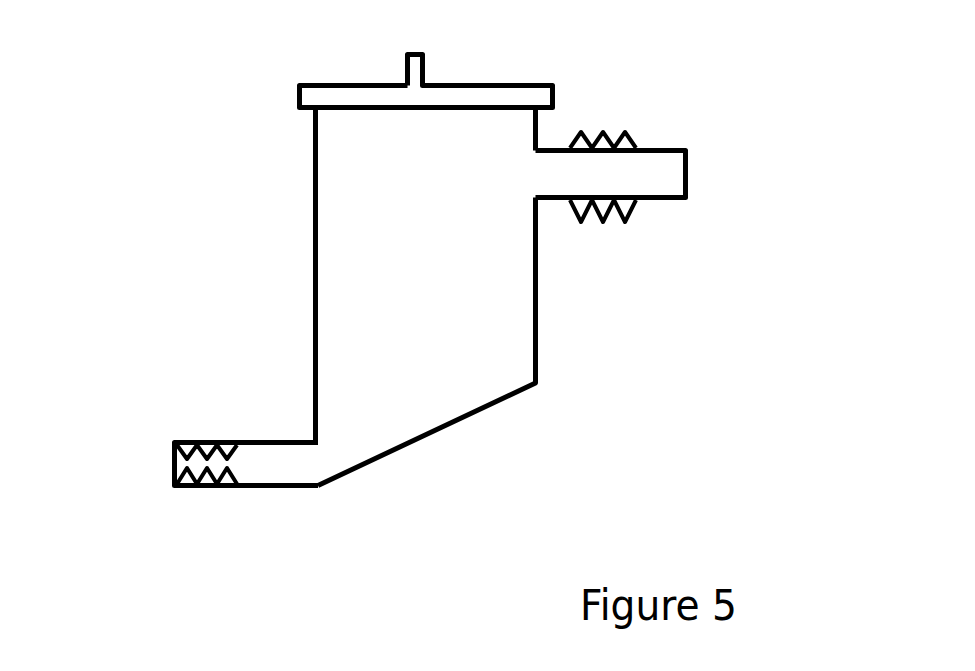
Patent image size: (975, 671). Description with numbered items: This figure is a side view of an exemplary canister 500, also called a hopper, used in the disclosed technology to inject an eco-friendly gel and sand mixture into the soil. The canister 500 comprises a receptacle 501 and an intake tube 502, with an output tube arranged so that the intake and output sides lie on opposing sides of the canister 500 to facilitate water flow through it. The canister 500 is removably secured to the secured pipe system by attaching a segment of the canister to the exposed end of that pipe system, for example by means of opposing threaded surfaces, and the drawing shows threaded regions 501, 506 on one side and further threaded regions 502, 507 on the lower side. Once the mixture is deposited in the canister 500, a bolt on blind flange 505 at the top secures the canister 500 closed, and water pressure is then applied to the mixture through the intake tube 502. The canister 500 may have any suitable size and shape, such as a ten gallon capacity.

The canister 500 is at (561, 83).
The receptacle 501 is at (633, 138).
The intake tube 502 is at (185, 446).
The bolt on blind flange 505 is at (292, 98).
The side port 506 is at (697, 173).
The lower port 507 is at (172, 448).